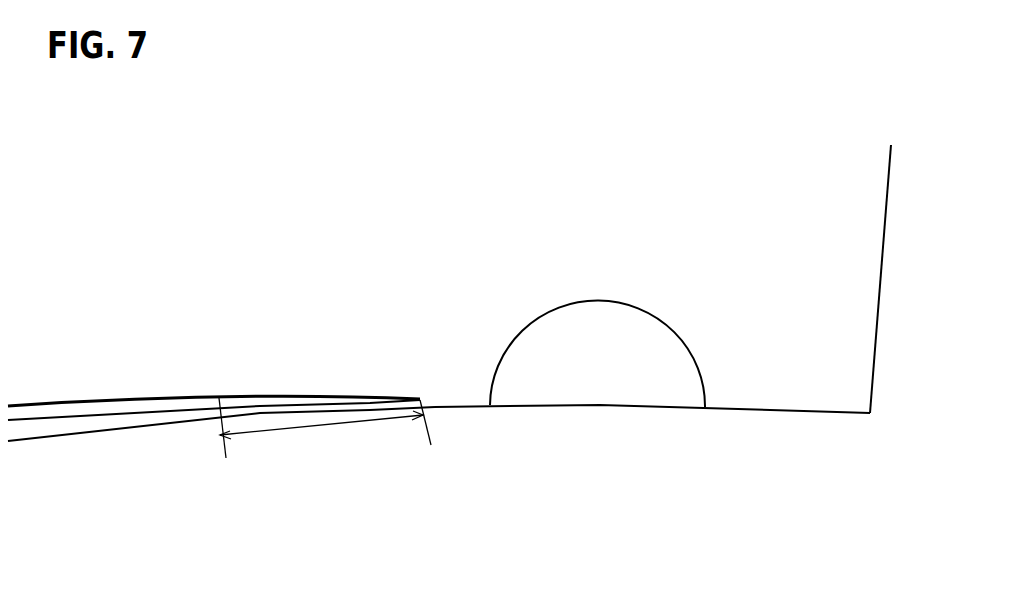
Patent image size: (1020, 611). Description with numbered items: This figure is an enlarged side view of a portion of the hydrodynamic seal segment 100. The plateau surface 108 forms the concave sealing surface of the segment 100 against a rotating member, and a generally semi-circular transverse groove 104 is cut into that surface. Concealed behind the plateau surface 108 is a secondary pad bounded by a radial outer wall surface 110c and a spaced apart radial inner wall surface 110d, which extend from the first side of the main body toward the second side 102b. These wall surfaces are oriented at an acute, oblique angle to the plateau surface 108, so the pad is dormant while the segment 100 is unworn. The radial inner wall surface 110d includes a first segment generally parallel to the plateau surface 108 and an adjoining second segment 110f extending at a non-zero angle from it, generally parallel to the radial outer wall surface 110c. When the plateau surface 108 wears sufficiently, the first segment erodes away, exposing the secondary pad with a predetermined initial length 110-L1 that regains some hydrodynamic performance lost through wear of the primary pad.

The segment 100 is at (160, 226).
The radial outer wall surface 110c is at (220, 397).
The radial inner wall surface 110d is at (69, 417).
The second segment 110f is at (155, 414).
The length 110-L1 is at (325, 443).
The transverse groove 104 is at (602, 378).
The plateau surface 108 is at (780, 407).
The second side 102b is at (818, 408).